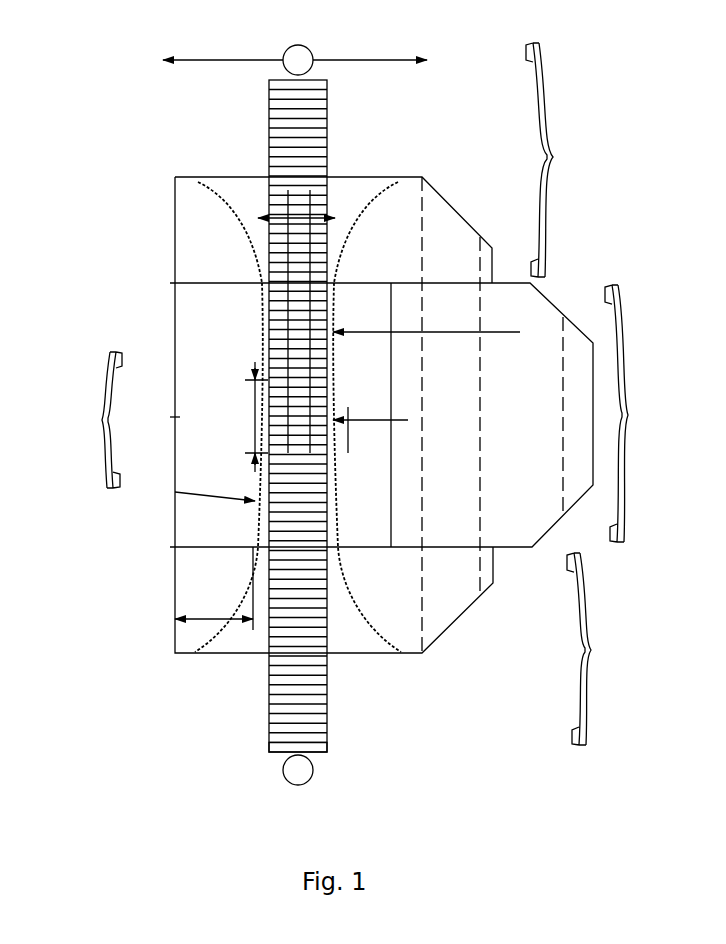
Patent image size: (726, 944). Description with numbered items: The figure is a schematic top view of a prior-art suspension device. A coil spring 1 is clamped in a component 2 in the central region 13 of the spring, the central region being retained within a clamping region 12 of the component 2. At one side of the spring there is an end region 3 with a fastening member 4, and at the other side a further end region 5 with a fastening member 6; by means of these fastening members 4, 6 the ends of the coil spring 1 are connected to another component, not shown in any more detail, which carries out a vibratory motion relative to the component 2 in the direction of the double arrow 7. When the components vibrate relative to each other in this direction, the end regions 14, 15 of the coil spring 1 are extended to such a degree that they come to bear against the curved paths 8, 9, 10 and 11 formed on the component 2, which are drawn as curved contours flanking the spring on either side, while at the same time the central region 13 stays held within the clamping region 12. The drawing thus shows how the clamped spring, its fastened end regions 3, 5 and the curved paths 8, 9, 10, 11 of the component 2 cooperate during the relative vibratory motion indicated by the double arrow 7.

The coil spring 1 is at (326, 740).
The component 2 is at (425, 656).
The end region 3 is at (326, 88).
The fastening member 4 is at (288, 67).
The further end region 5 is at (268, 745).
The fastening member 6 is at (302, 772).
The double arrow 7 is at (378, 59).
The curved path 8 is at (380, 178).
The curved path 9 is at (225, 178).
The curved path 10 is at (225, 652).
The curved path 11 is at (360, 640).
The clamping region 12 is at (102, 420).
The central region 13 is at (630, 415).
The end region 14 is at (555, 157).
The end region 15 is at (594, 650).